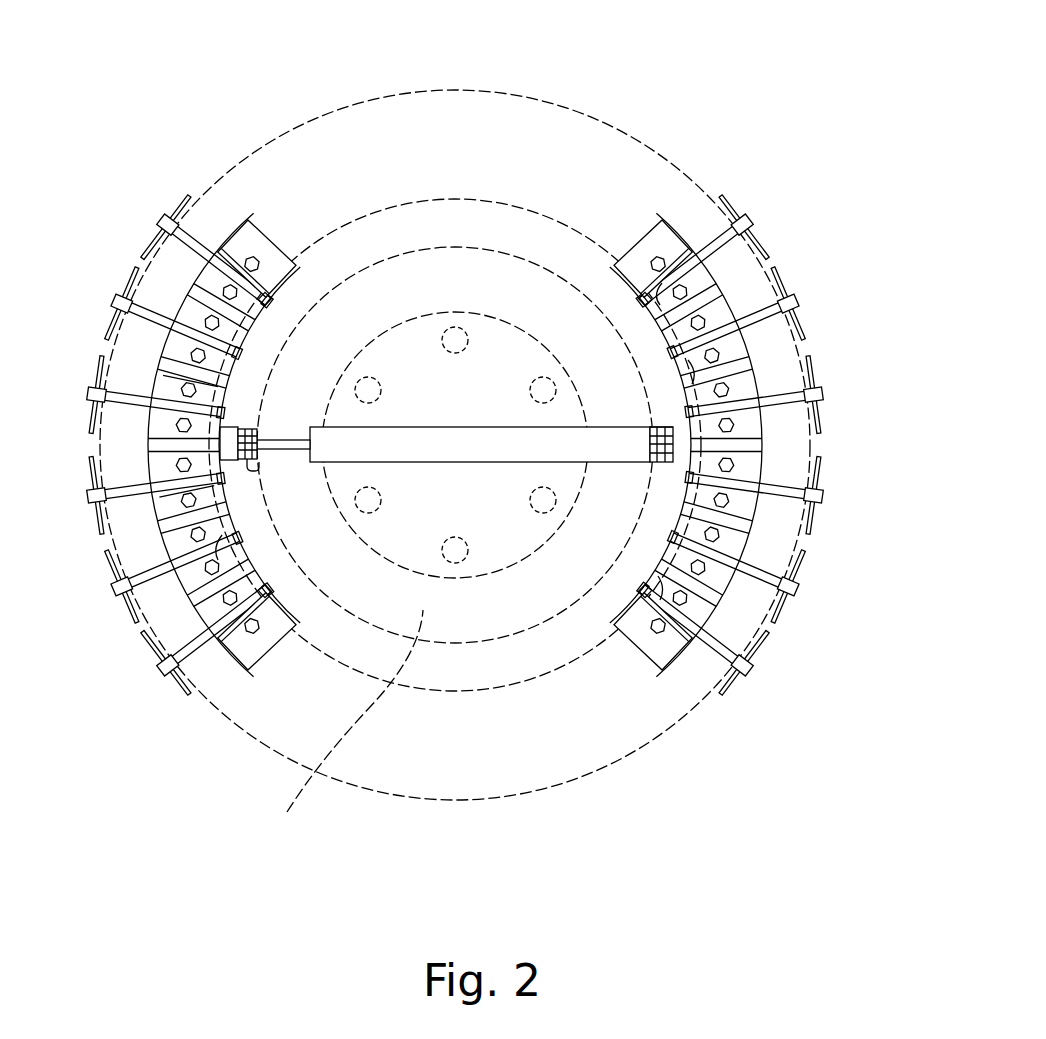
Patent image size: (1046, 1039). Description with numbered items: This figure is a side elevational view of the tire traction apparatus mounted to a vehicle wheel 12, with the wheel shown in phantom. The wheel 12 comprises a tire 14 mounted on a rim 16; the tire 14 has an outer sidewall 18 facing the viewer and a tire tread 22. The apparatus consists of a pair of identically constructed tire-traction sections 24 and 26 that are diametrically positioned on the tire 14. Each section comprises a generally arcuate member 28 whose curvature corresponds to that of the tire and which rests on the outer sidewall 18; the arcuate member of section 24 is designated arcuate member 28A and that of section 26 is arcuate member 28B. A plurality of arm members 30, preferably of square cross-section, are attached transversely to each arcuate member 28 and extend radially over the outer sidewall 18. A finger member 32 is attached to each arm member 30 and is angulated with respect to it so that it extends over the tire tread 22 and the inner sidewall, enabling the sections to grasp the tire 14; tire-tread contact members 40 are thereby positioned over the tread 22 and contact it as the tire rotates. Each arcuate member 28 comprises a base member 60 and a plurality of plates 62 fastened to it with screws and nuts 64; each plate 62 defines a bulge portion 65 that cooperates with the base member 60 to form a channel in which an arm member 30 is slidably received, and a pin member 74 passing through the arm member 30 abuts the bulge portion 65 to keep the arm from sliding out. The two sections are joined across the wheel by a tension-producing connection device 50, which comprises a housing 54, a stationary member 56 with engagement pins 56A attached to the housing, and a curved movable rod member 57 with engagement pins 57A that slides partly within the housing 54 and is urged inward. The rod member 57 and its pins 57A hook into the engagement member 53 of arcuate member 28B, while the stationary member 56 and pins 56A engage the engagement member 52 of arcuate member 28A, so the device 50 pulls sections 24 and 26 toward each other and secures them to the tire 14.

The wheel 12 is at (624, 90).
The tire 14 is at (225, 170).
The rim 16 is at (288, 812).
The outer sidewall 18 is at (505, 140).
The tire tread 22 is at (324, 112).
The tire-traction section 24 is at (747, 540).
The tire-traction section 26 is at (222, 640).
The arcuate member 28 is at (455, 222).
The arcuate member 28A is at (655, 235).
The arcuate member 28B is at (262, 232).
The arm member 30 is at (182, 242).
The finger member 32 is at (157, 218).
The tire-tread contact member 40 is at (126, 288).
The tension-producing connection device 50 is at (455, 463).
The engagement member 52 is at (675, 470).
The engagement member 53 is at (236, 425).
The housing 54 is at (503, 426).
The stationary member 56 is at (652, 430).
The engagement pins 56A is at (658, 425).
The rod member 57 is at (280, 437).
The engagement pins 57A is at (253, 463).
The base member 60 is at (253, 652).
The plate 62 is at (165, 500).
The nut 64 is at (232, 240).
The bulge portion 65 is at (217, 540).
The pin member 74 is at (272, 302).